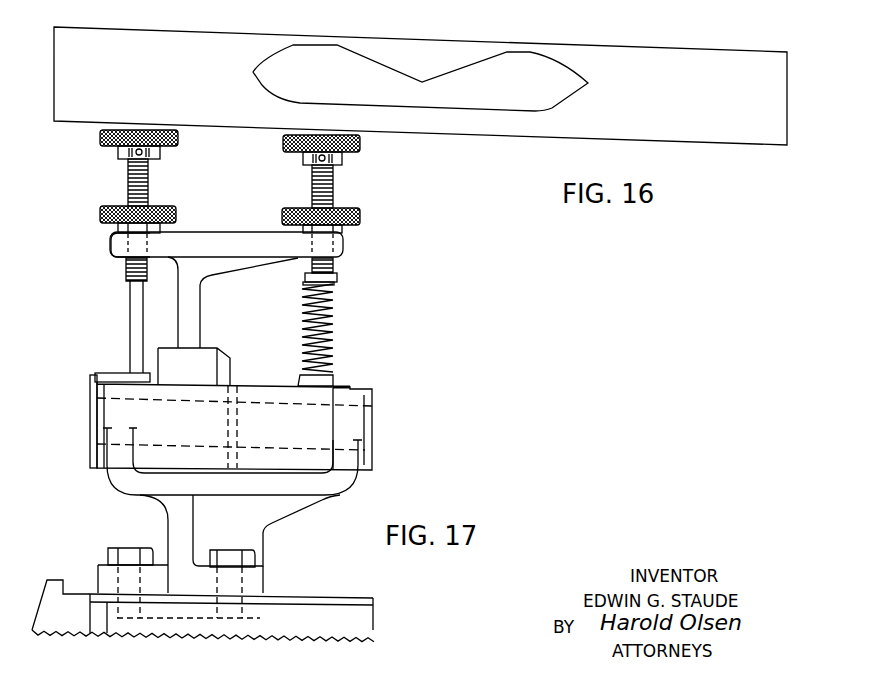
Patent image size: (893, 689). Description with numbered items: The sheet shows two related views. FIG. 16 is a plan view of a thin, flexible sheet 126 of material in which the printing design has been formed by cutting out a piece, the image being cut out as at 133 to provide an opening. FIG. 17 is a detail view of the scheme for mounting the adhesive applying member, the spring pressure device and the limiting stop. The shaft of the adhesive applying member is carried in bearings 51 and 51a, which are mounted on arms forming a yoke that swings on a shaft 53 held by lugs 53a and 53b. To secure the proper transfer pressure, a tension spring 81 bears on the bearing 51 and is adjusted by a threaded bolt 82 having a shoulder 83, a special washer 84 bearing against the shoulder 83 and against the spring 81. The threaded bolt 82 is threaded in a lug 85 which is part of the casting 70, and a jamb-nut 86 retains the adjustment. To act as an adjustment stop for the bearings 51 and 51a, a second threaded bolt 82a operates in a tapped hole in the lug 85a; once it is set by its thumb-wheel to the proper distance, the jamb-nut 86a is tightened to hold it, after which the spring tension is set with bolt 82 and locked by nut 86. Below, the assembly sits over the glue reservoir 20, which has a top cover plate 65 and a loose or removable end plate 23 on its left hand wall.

In FIG. 16, the plate 126 is at (655, 70).
In FIG. 16, the cut-out image 133 is at (538, 70).
In FIG. 16, the threaded bolt 82 is at (333, 182).
In FIG. 16, the threaded bolt 82a is at (128, 173).
In FIG. 16, the jamb-nut 86 is at (358, 218).
In FIG. 16, the jamb-nut 86a is at (100, 212).
In FIG. 16, the lug 85 is at (342, 250).
In FIG. 16, the lug 85a is at (118, 243).
In FIG. 16, the shoulder 83 is at (337, 273).
In FIG. 16, the special washer 84 is at (334, 281).
In FIG. 16, the tension spring 81 is at (335, 327).
In FIG. 16, the casting 70 is at (196, 310).
In FIG. 17, the casting 70 is at (272, 520).
In FIG. 17, the bearing 51 is at (350, 387).
In FIG. 17, the bearing 51a is at (95, 377).
In FIG. 17, the shaft 53 is at (97, 428).
In FIG. 17, the lug 53a is at (358, 412).
In FIG. 17, the lug 53b is at (110, 405).
In FIG. 17, the end plate 23 is at (98, 608).
In FIG. 17, the top cover plate 65 is at (292, 600).
In FIG. 17, the reservoir 20 is at (328, 613).